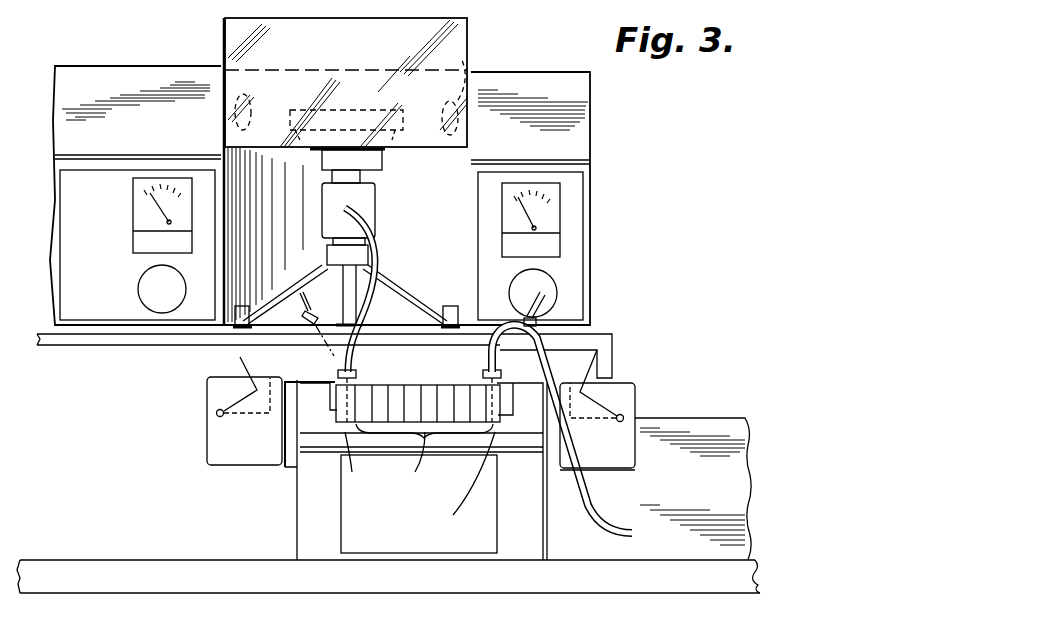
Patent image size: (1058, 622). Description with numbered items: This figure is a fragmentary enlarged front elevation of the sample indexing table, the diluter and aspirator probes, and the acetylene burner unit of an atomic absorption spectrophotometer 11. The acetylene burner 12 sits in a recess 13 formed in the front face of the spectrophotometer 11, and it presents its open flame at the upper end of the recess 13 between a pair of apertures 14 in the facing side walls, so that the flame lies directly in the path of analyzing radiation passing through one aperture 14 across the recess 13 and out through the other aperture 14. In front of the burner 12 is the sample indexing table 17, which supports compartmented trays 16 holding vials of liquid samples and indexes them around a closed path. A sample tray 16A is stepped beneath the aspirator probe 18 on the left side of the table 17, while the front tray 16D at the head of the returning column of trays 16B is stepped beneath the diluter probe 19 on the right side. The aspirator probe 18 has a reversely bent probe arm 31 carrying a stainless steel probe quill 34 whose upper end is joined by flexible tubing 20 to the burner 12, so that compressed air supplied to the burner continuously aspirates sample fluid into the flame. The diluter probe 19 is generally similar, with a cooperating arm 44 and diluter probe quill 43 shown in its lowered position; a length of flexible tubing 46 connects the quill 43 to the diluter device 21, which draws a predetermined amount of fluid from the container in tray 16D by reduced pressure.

The atomic absorption spectrophotometer 11 is at (113, 327).
The acetylene burner 12 is at (382, 203).
The recess 13 is at (448, 185).
The apertures 14 is at (248, 90).
The compartmented trays 16 is at (428, 385).
The sample tray 16A is at (361, 466).
The returning column of trays 16B is at (427, 468).
The front tray 16D is at (455, 488).
The sample indexing table 17 is at (293, 516).
The aspirator probe 18 is at (205, 440).
The diluter probe 19 is at (650, 403).
The flexible tubing 20 is at (376, 288).
The diluter device 21 is at (750, 418).
The probe arm 31 is at (240, 357).
The probe quill 34 is at (320, 350).
The diluter probe quill 43 is at (491, 362).
The arm 44 is at (603, 403).
The flexible tubing 46 is at (585, 490).